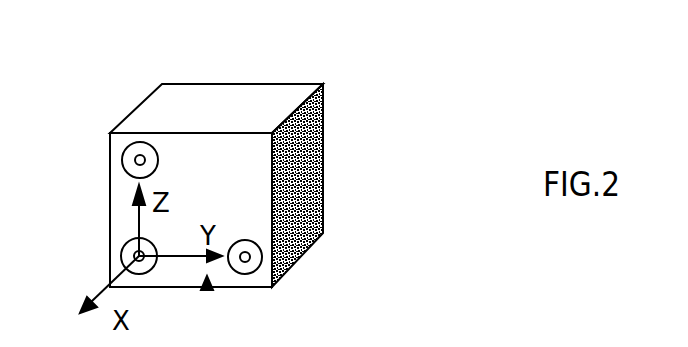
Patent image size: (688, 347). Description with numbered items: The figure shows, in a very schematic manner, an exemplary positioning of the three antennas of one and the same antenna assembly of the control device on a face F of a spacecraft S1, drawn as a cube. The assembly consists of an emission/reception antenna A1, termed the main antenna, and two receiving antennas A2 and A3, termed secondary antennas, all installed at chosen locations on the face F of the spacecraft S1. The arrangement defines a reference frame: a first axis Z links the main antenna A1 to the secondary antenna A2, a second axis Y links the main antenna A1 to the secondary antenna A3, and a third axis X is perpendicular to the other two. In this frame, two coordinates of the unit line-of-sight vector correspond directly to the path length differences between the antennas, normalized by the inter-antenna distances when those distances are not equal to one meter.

The emission/reception antenna A1 is at (123, 253).
The receiving antenna A2 is at (122, 157).
The receiving antenna A3 is at (262, 262).
The spacecraft S1 is at (339, 185).
The face F is at (208, 290).